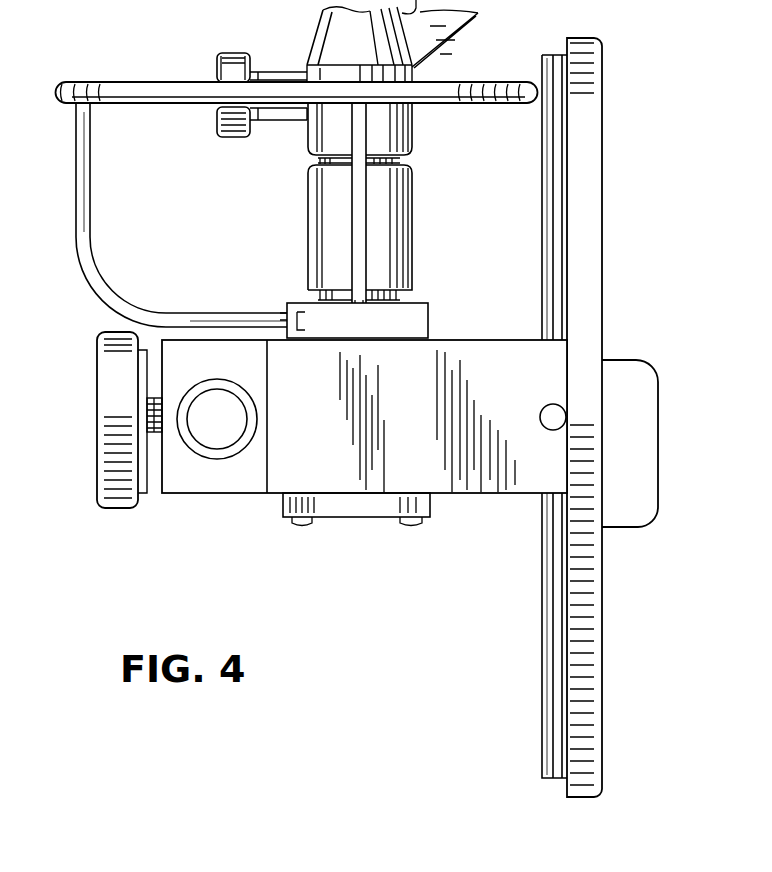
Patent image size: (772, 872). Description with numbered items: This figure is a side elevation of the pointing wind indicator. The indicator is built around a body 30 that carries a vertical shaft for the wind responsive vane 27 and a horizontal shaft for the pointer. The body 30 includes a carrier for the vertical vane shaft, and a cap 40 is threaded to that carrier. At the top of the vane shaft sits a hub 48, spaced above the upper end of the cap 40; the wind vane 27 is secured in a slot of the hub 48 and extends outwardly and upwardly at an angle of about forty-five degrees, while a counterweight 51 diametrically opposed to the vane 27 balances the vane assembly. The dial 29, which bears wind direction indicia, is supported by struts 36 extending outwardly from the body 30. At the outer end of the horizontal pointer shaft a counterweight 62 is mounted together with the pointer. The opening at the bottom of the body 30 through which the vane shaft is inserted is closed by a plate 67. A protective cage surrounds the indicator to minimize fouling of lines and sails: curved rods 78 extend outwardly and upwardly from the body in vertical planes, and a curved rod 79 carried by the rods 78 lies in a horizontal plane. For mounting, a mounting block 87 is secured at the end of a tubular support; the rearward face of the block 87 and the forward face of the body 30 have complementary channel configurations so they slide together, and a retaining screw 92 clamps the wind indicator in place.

The wind responsive vane 27 is at (478, 14).
The dial 29 is at (602, 122).
The body 30 is at (460, 487).
The struts 36 is at (548, 610).
The cap 40 is at (398, 243).
The hub 48 is at (397, 120).
The counterweight 51 is at (237, 67).
The counterweight 62 is at (637, 488).
The plate 67 is at (337, 510).
The curved rods 78 is at (358, 210).
The curved rod 79 is at (475, 92).
The mounting block 87 is at (180, 483).
The retaining screw 92 is at (107, 418).